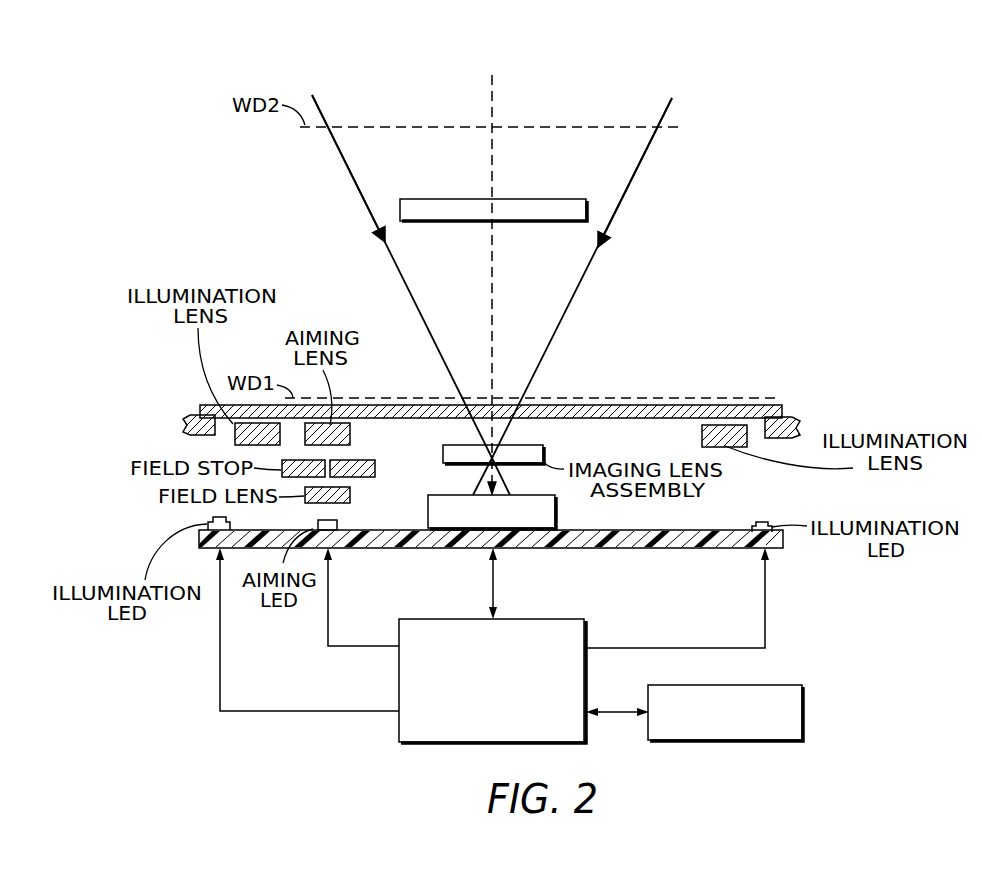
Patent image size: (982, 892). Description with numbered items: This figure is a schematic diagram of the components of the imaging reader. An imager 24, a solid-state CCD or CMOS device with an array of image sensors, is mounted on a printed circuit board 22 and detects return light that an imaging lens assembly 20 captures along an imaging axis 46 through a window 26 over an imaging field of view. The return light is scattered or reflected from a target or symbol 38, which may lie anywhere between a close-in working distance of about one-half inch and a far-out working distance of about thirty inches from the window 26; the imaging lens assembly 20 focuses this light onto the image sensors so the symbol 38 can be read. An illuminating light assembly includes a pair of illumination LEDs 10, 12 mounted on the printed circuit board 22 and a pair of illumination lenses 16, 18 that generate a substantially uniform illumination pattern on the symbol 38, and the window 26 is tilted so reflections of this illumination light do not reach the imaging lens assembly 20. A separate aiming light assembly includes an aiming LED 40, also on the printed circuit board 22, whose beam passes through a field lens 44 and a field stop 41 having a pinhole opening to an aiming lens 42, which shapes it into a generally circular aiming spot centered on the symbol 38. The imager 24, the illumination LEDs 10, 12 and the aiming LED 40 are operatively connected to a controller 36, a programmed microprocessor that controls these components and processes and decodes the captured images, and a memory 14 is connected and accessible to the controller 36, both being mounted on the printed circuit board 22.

The illumination LED 10 is at (765, 522).
The illumination LED 12 is at (212, 517).
The memory 14 is at (804, 714).
The illumination lens 16 is at (702, 437).
The illumination lens 18 is at (235, 438).
The imaging lens assembly 20 is at (513, 467).
The printed circuit board 22 is at (620, 549).
The imager 24 is at (558, 508).
The window 26 is at (200, 406).
The controller 36 is at (455, 618).
The symbol 38 is at (543, 199).
The aiming LED 40 is at (338, 523).
The field stop 41 is at (375, 468).
The aiming lens 42 is at (350, 432).
The field lens 44 is at (352, 495).
The imaging axis 46 is at (492, 105).